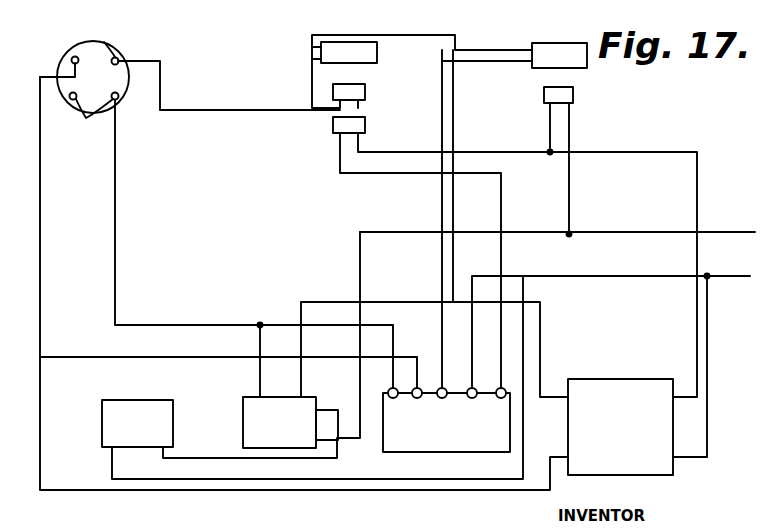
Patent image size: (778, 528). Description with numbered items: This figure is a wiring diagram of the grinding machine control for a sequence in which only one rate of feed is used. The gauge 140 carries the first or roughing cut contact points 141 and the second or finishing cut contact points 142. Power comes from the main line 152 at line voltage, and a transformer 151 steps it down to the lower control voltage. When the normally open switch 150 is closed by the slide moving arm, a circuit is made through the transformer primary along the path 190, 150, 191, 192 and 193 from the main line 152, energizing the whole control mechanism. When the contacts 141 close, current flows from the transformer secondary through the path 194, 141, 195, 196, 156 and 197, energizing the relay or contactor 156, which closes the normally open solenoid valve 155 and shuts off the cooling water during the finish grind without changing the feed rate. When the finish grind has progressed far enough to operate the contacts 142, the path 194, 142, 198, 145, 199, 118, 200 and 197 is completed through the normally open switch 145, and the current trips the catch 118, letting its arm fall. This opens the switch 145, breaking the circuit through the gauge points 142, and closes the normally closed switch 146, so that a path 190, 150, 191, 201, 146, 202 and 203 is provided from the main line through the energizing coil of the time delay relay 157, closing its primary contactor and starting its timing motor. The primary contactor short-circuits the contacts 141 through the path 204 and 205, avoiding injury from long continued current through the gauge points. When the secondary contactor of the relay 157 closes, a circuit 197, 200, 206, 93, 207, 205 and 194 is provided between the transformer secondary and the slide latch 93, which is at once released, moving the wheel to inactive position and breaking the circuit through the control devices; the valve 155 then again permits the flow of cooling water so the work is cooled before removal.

The catch 93 is at (580, 66).
The catch 118 is at (377, 50).
The gauge 140 is at (68, 52).
The first or roughing cut contact points 141 is at (86, 118).
The second or finishing cut contact points 142 is at (104, 42).
The toggle switch 145 is at (365, 92).
The toggle switch 146 is at (365, 125).
The fifth switch 150 is at (573, 95).
The transformer 151 is at (658, 462).
The line 152 is at (722, 234).
The solenoid valve 155 is at (170, 382).
The relay or contactor 156 is at (243, 434).
The time delay relay 157 is at (446, 420).
The path 190 is at (569, 186).
The path 191 is at (550, 132).
The path 192 is at (697, 193).
The path 193 is at (707, 378).
The path 194 is at (40, 232).
The path 195 is at (115, 212).
The path 196 is at (258, 342).
The path 197 is at (301, 302).
The path 198 is at (224, 110).
The path 199 is at (312, 80).
The path 200 is at (440, 35).
The path 201 is at (470, 152).
The path 202 is at (501, 210).
The path 203 is at (496, 276).
The path 204 is at (228, 348).
The path 205 is at (337, 335).
The path 206 is at (462, 62).
The path 207 is at (442, 110).